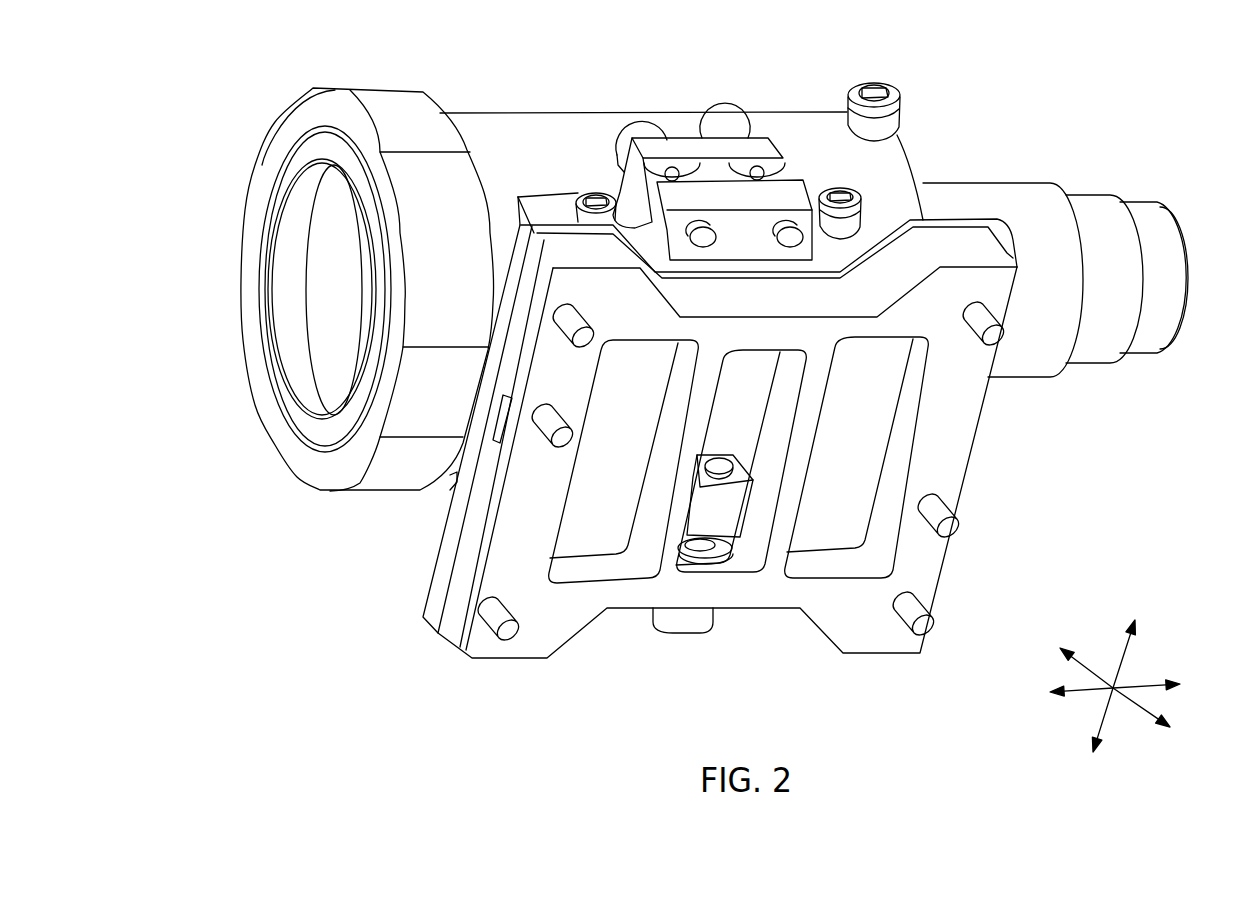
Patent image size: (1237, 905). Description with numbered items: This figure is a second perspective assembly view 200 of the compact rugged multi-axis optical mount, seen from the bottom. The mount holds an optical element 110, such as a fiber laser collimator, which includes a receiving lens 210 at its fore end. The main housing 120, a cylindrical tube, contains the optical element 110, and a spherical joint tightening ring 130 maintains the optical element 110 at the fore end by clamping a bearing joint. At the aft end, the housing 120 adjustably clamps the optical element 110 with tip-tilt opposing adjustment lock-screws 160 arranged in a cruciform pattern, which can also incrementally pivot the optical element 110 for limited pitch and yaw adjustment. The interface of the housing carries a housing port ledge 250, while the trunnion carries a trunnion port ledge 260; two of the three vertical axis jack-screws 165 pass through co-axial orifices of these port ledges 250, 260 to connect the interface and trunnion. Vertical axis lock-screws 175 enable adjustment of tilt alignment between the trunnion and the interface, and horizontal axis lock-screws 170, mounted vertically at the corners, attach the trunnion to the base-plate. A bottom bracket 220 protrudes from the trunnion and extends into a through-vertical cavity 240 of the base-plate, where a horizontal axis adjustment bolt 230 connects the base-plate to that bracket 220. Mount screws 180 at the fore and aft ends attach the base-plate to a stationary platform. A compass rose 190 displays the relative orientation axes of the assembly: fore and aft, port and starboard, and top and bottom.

The optical element 110 is at (1060, 373).
The main housing 120 is at (507, 116).
The spherical joint tightening ring 130 is at (366, 88).
The tip-tilt opposing adjustment lock-screws 160 is at (863, 83).
The vertical axis jack-screws 165 is at (634, 122).
The horizontal axis lock-screws 170 is at (935, 622).
The vertical axis lock-screws 175 is at (846, 190).
The mount screws 180 is at (953, 527).
The compass rose 190 is at (1195, 579).
The second perspective assembly view 200 is at (1040, 118).
The receiving lens 210 is at (273, 329).
The bottom bracket 220 is at (744, 501).
The horizontal axis adjustment bolt 230 is at (654, 626).
The through-vertical cavity 240 is at (792, 420).
The housing port ledge 250 is at (682, 137).
The trunnion port ledge 260 is at (792, 182).